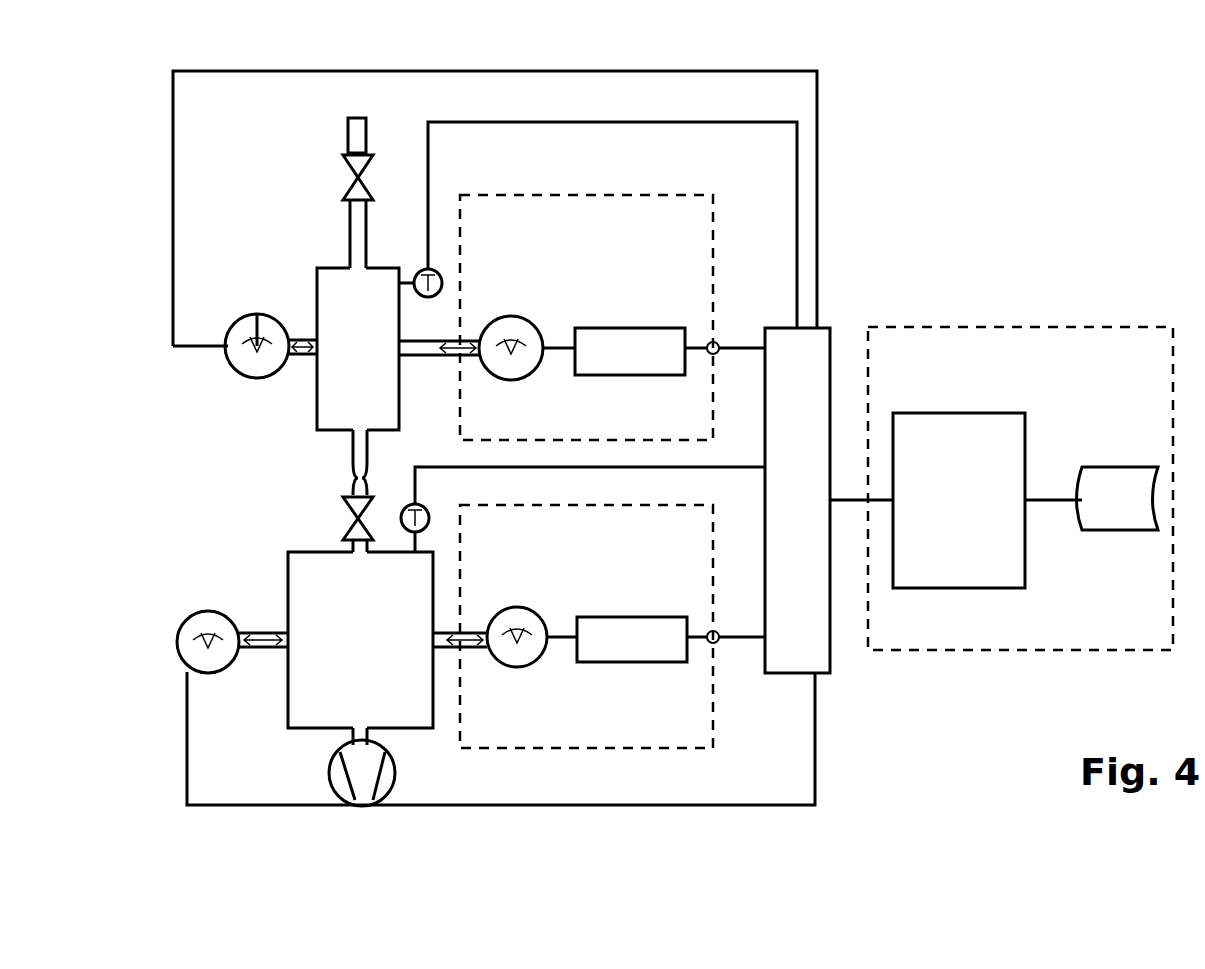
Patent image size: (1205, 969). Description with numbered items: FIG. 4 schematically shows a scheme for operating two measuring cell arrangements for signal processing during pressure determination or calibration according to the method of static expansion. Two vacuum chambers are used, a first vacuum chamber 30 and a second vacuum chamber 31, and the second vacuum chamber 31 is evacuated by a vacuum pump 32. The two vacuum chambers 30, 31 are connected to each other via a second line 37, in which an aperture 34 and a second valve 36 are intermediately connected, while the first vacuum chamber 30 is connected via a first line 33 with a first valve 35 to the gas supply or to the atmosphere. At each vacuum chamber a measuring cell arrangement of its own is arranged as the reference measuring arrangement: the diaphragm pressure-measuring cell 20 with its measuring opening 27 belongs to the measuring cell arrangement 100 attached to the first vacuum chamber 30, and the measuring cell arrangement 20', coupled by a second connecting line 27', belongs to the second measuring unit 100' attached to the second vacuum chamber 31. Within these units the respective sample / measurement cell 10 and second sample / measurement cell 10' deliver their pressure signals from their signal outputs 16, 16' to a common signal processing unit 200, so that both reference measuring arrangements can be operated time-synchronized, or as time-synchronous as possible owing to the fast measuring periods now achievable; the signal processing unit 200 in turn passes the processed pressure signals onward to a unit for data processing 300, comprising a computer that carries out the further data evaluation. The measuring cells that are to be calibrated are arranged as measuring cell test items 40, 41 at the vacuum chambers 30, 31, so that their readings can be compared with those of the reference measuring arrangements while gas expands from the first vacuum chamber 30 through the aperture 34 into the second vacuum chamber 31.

The sample / measurement cell 10 is at (641, 351).
The second sample / measurement cell 10' is at (642, 639).
The signal output 16 is at (742, 296).
The signal output 16' is at (750, 677).
The diaphragm pressure-measuring cell 20 is at (527, 311).
The measuring cell arrangement 20' is at (545, 660).
The measuring opening 27 is at (447, 309).
The second connecting line 27' is at (479, 592).
The first vacuum chamber 30 is at (322, 303).
The second vacuum chamber 31 is at (332, 590).
The vacuum pump 32 is at (360, 775).
The first line 33 is at (355, 243).
The aperture 34 is at (358, 480).
The first valve 35 is at (350, 165).
The second valve 36 is at (350, 505).
The second line 37 is at (358, 453).
The measuring cell test item 40 is at (225, 370).
The measuring cell test item 41 is at (188, 603).
The measuring cell arrangement 100 is at (586, 317).
The second measuring unit 100' is at (586, 626).
The signal processing unit 200 is at (818, 494).
The unit for data processing 300 is at (1150, 390).